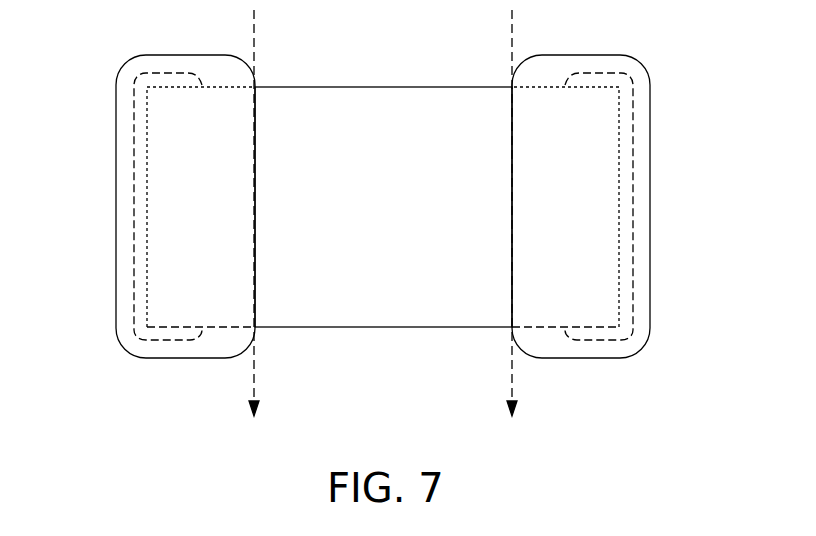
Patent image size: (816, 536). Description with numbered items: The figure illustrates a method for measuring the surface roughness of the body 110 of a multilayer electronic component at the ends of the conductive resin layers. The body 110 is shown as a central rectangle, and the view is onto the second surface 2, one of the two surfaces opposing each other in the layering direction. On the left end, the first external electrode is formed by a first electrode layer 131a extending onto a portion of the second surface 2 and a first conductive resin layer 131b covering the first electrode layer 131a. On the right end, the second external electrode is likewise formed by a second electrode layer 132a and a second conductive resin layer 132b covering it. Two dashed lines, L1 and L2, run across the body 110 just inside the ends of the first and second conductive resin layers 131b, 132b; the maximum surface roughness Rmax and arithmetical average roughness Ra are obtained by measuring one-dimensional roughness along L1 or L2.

The second surface 2 is at (436, 120).
The body 110 is at (340, 87).
The first electrode layer 131a is at (145, 148).
The first conductive resin layer 131b is at (134, 213).
The second electrode layer 132a is at (622, 148).
The second conductive resin layer 132b is at (633, 213).
The measurement line L1 is at (254, 355).
The measurement line L2 is at (512, 355).